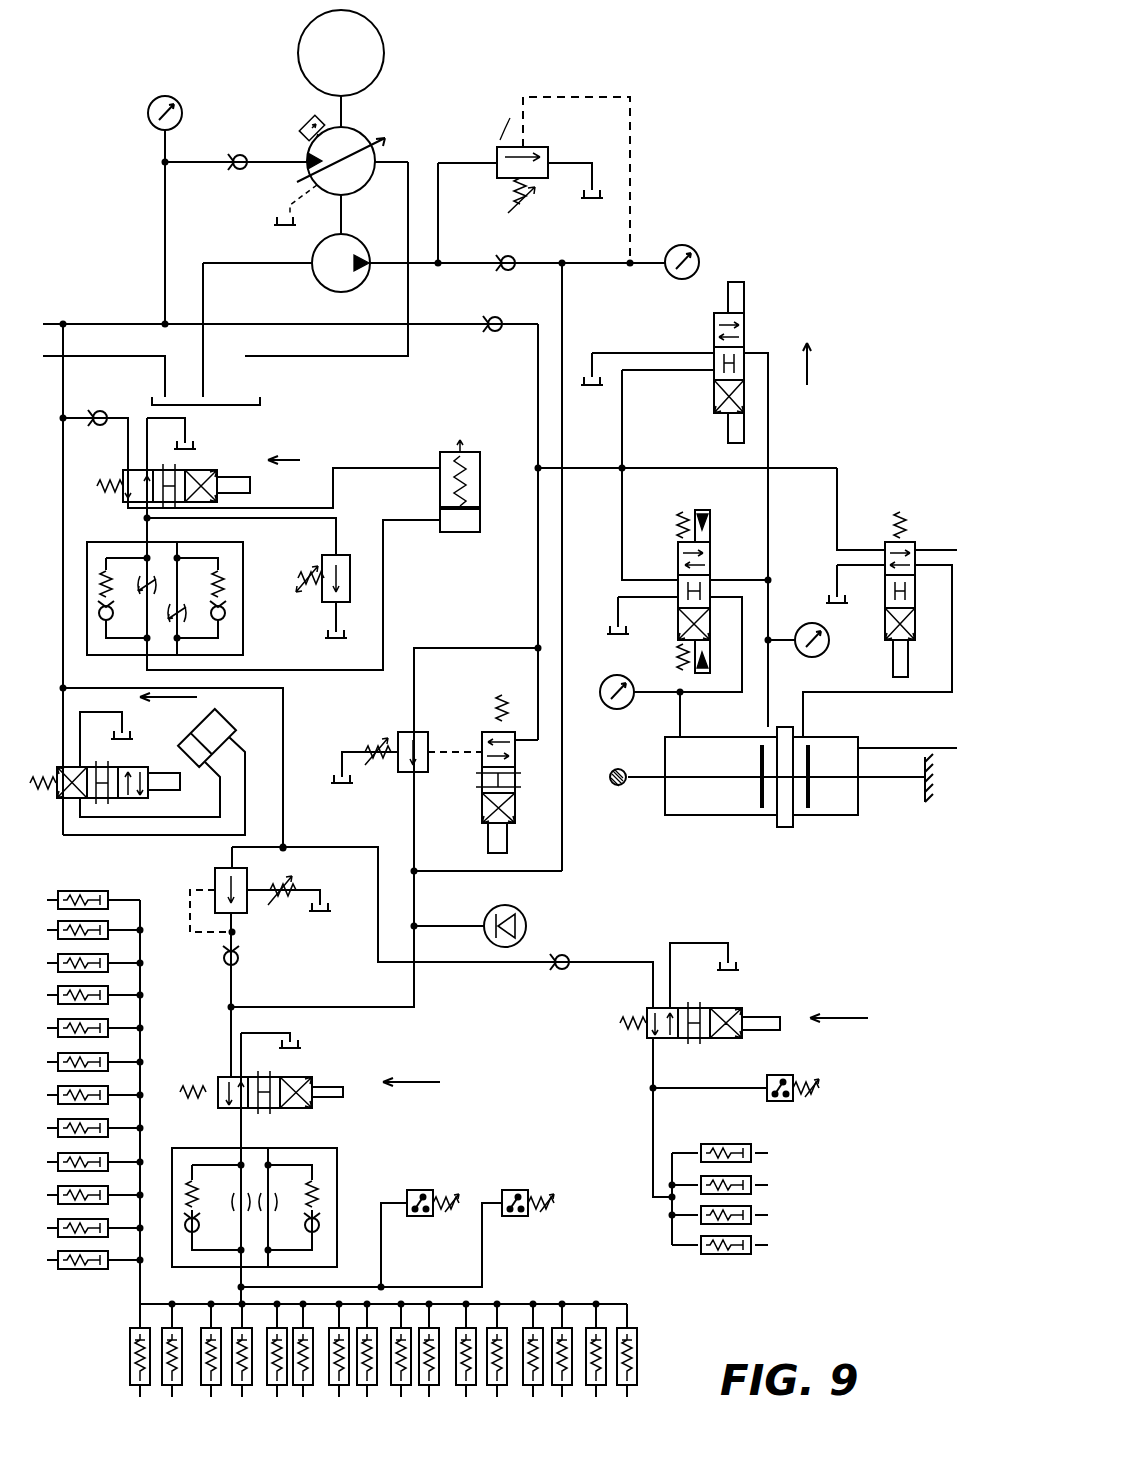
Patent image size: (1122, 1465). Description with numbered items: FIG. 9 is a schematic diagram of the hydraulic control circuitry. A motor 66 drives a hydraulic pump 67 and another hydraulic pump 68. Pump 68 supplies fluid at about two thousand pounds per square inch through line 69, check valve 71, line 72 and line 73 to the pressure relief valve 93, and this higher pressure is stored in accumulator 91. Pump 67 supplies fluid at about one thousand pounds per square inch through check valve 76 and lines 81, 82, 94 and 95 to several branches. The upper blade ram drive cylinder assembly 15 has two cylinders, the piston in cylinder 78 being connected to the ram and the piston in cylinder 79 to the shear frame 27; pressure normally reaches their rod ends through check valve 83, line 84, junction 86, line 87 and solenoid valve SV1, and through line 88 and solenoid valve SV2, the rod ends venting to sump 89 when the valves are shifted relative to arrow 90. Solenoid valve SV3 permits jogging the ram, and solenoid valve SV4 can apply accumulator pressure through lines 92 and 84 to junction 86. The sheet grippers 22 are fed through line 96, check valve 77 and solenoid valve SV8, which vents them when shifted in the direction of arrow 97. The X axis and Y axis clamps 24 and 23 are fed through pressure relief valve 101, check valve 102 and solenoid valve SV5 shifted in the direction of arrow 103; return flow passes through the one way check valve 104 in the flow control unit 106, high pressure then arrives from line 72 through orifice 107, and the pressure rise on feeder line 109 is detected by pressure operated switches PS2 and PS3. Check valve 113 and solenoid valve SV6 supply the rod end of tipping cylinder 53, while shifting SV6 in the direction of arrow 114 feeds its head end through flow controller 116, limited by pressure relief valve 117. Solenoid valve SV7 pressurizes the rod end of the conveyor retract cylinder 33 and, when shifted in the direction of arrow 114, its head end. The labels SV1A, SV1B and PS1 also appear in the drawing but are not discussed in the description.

The motor 66 is at (385, 60).
The hydraulic pump 67 is at (367, 134).
The hydraulic pump 68 is at (320, 280).
The line 69 is at (430, 268).
The check valve 71 is at (515, 258).
The line 72 is at (565, 302).
The check valve 76 is at (240, 155).
The line 81 is at (206, 160).
The line 82 is at (338, 324).
The check valve 83 is at (495, 332).
The line 84 is at (572, 468).
The junction 86 is at (624, 466).
The line 87 is at (622, 518).
The line 88 is at (795, 468).
The sump 89 is at (275, 218).
The arrow 90 is at (808, 365).
The accumulator 91 is at (526, 918).
The line 92 is at (538, 668).
The pressure relief valve 93 is at (420, 732).
The line 94 is at (130, 324).
The line 95 is at (63, 518).
The line 96 is at (283, 726).
The arrow 97 is at (870, 990).
The pressure relief valve 101 is at (248, 900).
The check valve 102 is at (240, 962).
The arrow 103 is at (436, 1080).
The spring loaded one way check valve 104 is at (185, 1222).
The flow control unit 106 is at (337, 1148).
The orifice 107 is at (351, 999).
The feeder line 109 is at (241, 1292).
The check valve 113 is at (100, 410).
The arrow 114 is at (295, 465).
The flow controller 116 is at (243, 655).
The pressure relief valve 117 is at (336, 553).
The upper blade ram drive cylinder assembly 15 is at (774, 847).
The sheet grippers 22 is at (802, 1193).
The Y axis clamps 23 is at (88, 884).
The X axis clamps 24 is at (658, 1356).
The shear frame 27 is at (922, 795).
The conveyor retract cylinder 33 is at (240, 728).
The tipping cylinder 53 is at (440, 455).
The line 73 is at (414, 803).
The check valve 77 is at (557, 968).
The cylinder 78 is at (700, 816).
The cylinder 79 is at (830, 816).
The solenoid valve SV1 is at (700, 542).
The solenoid SV1A is at (703, 490).
The solenoid SV1B is at (680, 662).
The solenoid valve SV2 is at (915, 542).
The solenoid valve SV3 is at (748, 328).
The solenoid valve SV4 is at (490, 812).
The solenoid valve SV5 is at (290, 1077).
The solenoid valve SV6 is at (205, 470).
The solenoid valve SV7 is at (148, 775).
The solenoid valve SV8 is at (745, 1010).
The pressure switch PS1 is at (785, 1080).
The pressure operated switch PS2 is at (420, 1190).
The pressure operated switch PS3 is at (512, 1190).